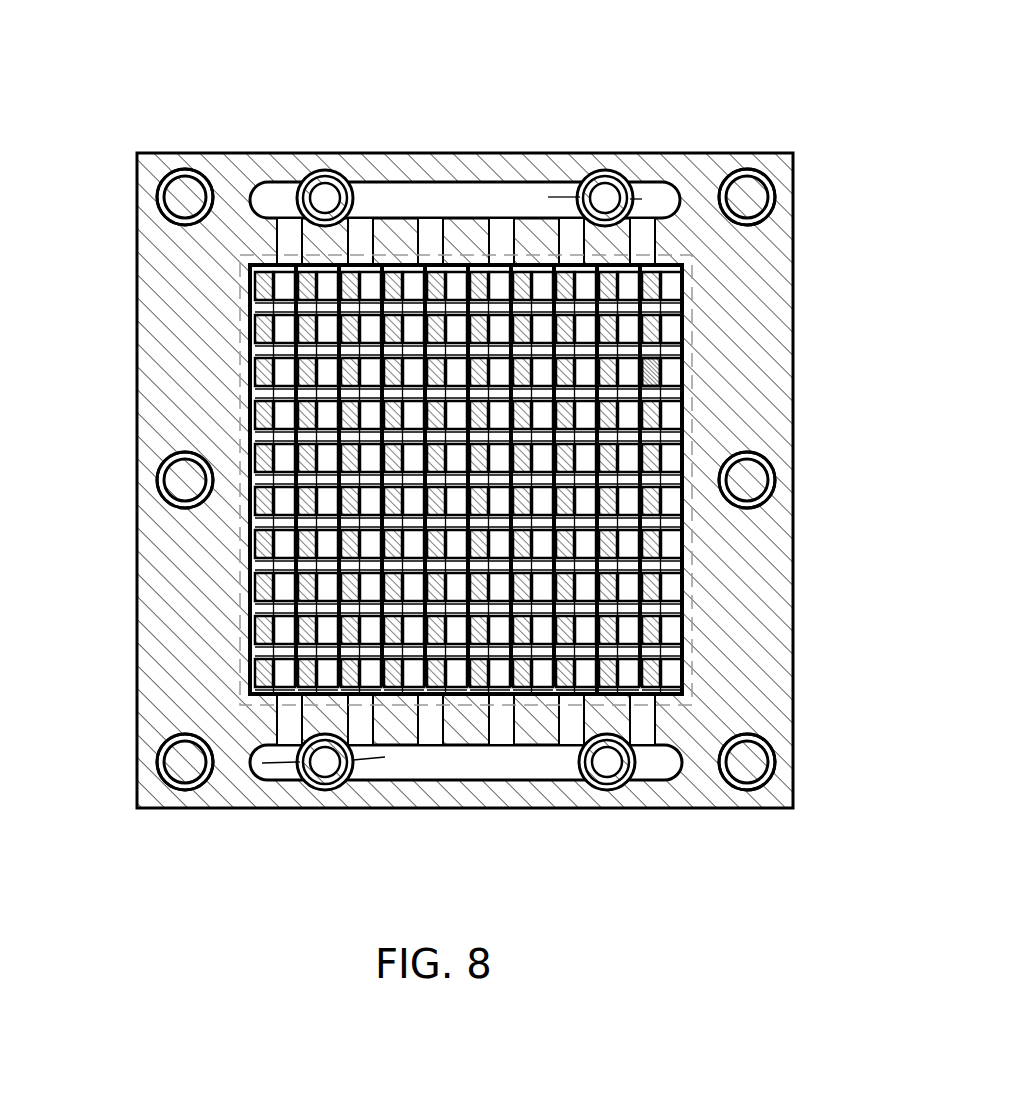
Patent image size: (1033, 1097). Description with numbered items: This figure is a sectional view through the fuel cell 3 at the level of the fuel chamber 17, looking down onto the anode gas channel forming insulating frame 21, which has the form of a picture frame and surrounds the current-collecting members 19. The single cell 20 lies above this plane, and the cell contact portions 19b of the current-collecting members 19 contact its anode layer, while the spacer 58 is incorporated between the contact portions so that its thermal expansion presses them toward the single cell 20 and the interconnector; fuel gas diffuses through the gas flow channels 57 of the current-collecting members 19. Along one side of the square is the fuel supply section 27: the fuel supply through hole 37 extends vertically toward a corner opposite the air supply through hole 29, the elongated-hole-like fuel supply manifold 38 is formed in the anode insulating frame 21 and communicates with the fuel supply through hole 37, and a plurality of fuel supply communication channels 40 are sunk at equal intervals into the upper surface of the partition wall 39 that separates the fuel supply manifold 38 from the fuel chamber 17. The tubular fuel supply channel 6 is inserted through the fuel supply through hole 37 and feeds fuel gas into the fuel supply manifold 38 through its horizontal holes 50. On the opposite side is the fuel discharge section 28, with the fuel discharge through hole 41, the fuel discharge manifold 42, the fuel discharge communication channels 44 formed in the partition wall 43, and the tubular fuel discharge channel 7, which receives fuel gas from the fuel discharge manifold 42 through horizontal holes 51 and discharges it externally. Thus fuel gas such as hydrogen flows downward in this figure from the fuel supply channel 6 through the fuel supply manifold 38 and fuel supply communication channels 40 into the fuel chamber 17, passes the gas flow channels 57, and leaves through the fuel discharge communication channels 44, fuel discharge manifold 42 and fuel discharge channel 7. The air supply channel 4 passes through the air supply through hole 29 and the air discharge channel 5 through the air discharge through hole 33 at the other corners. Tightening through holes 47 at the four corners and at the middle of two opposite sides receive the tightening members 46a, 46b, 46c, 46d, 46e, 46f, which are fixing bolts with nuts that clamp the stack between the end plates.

The fuel cell 3 is at (718, 112).
The air supply channel 4 is at (326, 165).
The air discharge channel 5 is at (610, 799).
The fuel supply channel 6 is at (498, 195).
The fuel discharge channel 7 is at (327, 765).
The fuel chamber 17 is at (670, 330).
The current-collecting members 19 is at (472, 479).
The cell contact portion 19b is at (655, 380).
The single cell 20 is at (242, 560).
The anode gas channel forming insulating frame 21 is at (160, 312).
The fuel supply section 27 is at (403, 206).
The fuel discharge section 28 is at (487, 757).
The air supply through hole 29 is at (325, 195).
The air discharge through hole 33 is at (607, 764).
The fuel supply through hole 37 is at (605, 195).
The fuel supply manifold 38 is at (455, 205).
The partition wall 39 is at (530, 240).
The fuel supply communication channels 40 is at (290, 228).
The fuel discharge through hole 41 is at (318, 775).
The fuel discharge manifold 42 is at (430, 758).
The partition wall 43 is at (530, 728).
The fuel discharge communication channels 44 is at (570, 732).
The tightening member 46a is at (185, 766).
The tightening member 46b is at (184, 190).
The tightening member 46c is at (747, 190).
The tightening member 46d is at (747, 766).
The tightening member 46e is at (752, 482).
The tightening member 46f is at (165, 483).
The tightening through holes 47 is at (160, 206).
The horizontal holes 50 is at (560, 197).
The horizontal holes 51 is at (280, 762).
The gas flow channels 57 is at (600, 585).
The spacer 58 is at (655, 652).